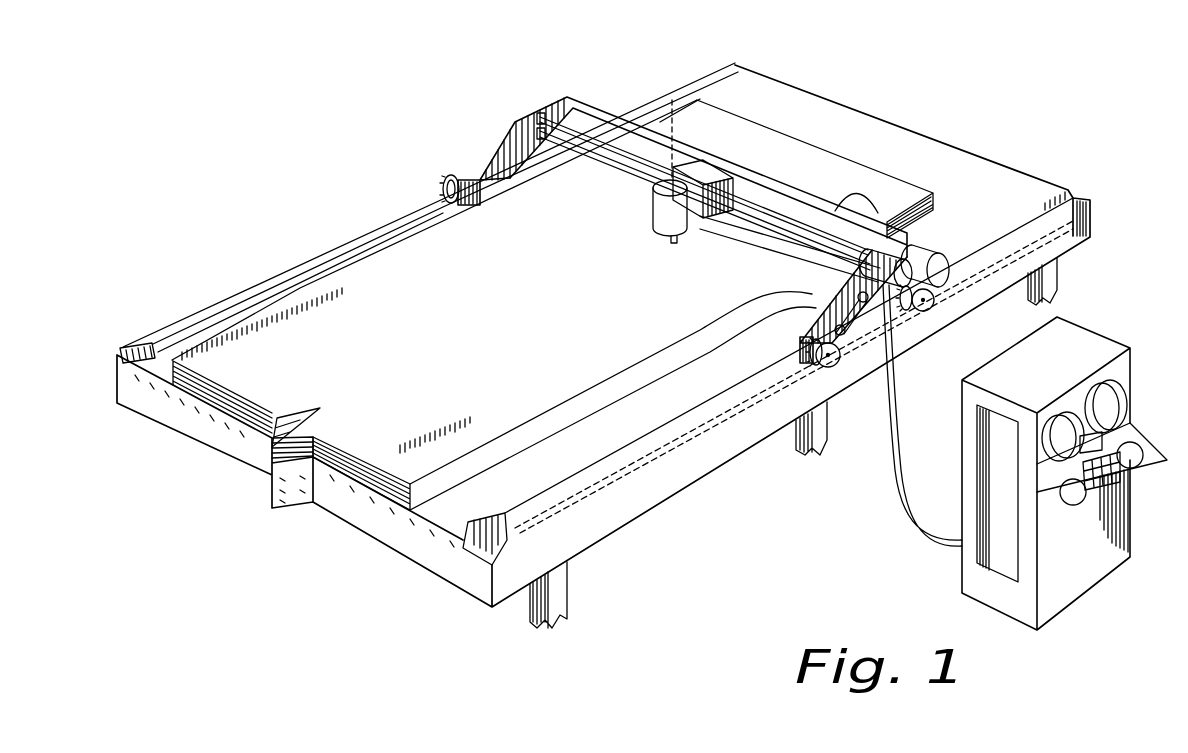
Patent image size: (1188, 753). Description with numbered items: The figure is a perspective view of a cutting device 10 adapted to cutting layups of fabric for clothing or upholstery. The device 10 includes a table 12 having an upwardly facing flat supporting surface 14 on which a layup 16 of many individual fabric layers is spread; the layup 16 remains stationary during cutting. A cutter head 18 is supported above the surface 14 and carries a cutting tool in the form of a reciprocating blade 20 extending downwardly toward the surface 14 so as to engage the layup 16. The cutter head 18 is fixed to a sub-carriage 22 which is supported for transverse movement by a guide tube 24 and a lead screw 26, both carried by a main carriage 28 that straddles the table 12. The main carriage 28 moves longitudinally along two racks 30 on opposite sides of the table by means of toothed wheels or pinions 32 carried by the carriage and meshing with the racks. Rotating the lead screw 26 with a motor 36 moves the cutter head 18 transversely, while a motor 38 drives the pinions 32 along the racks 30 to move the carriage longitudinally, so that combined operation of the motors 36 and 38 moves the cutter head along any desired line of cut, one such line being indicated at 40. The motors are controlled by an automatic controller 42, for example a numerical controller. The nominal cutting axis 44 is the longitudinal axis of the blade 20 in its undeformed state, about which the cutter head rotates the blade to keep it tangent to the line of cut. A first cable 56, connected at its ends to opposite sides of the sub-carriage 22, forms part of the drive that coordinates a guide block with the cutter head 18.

The cutting device 10 is at (790, 43).
The table 12 is at (985, 178).
The supporting surface 14 is at (812, 127).
The layup 16 is at (220, 336).
The cutter head 18 is at (660, 210).
The reciprocating blade 20 is at (673, 243).
The sub-carriage 22 is at (708, 178).
The guide tube 24 is at (750, 200).
The lead screw 26 is at (773, 223).
The main carriage 28 is at (528, 117).
The racks 30 is at (277, 283).
The toothed wheels or pinions 32 is at (462, 173).
The motor 36 is at (890, 263).
The motor 38 is at (928, 257).
The line of cut 40 is at (858, 200).
The automatic controller 42 is at (1053, 342).
The nominal cutting axis 44 is at (670, 96).
The first cable 56 is at (760, 247).